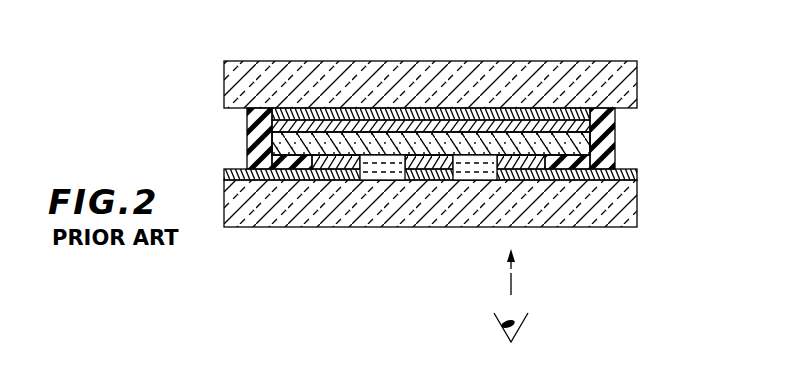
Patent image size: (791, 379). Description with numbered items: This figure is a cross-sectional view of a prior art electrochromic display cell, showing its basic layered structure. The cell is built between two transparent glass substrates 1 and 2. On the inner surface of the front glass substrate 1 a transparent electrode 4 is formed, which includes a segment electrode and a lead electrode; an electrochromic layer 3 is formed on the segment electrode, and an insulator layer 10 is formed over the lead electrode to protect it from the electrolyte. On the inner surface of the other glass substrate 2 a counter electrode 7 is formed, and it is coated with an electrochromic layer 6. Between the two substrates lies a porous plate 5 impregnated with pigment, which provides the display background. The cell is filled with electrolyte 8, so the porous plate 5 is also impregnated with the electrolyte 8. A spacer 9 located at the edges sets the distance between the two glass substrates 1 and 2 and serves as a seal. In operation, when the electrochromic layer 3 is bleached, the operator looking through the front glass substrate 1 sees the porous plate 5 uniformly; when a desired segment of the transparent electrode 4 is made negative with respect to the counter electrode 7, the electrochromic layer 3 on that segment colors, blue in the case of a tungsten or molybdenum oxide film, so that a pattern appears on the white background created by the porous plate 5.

The transparent glass substrate 1 is at (627, 212).
The transparent glass substrate 2 is at (637, 75).
The electrochromic layer 3 is at (337, 157).
The transparent electrode 4 is at (452, 140).
The porous plate 5 is at (547, 147).
The electrochromic layer 6 is at (612, 120).
The counter electrode 7 is at (493, 157).
The electrolyte 8 is at (387, 180).
The spacer 9 is at (247, 138).
The insulator layer 10 is at (303, 180).